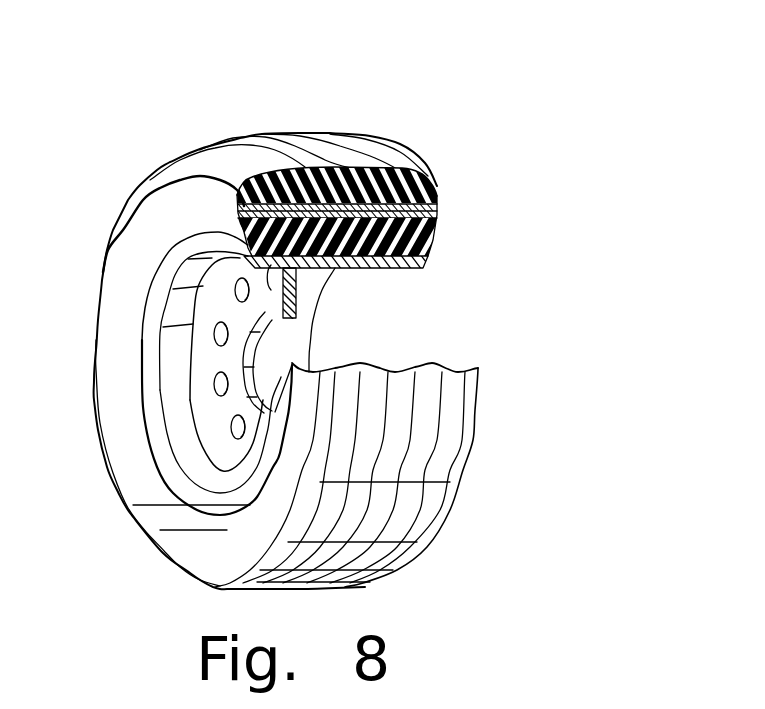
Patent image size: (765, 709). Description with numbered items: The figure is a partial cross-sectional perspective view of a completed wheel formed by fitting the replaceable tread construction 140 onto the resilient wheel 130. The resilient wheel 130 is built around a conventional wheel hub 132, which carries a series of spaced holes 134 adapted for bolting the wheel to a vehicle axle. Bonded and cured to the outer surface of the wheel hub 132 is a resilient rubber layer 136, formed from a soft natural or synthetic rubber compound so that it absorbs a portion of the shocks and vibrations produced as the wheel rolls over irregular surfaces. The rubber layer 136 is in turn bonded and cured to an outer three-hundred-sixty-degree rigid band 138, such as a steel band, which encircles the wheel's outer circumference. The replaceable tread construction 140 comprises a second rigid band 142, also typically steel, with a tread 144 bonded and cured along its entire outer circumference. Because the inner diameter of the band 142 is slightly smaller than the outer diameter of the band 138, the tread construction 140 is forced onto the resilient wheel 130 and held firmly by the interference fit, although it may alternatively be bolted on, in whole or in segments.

The resilient wheel 130 is at (493, 72).
The replaceable tread construction 140 is at (282, 361).
The wheel hub 132 is at (432, 258).
The spaced holes 134 is at (215, 393).
The resilient rubber layer 136 is at (435, 235).
The rigid band 138 is at (433, 207).
The second rigid band 142 is at (433, 202).
The tread 144 is at (432, 170).